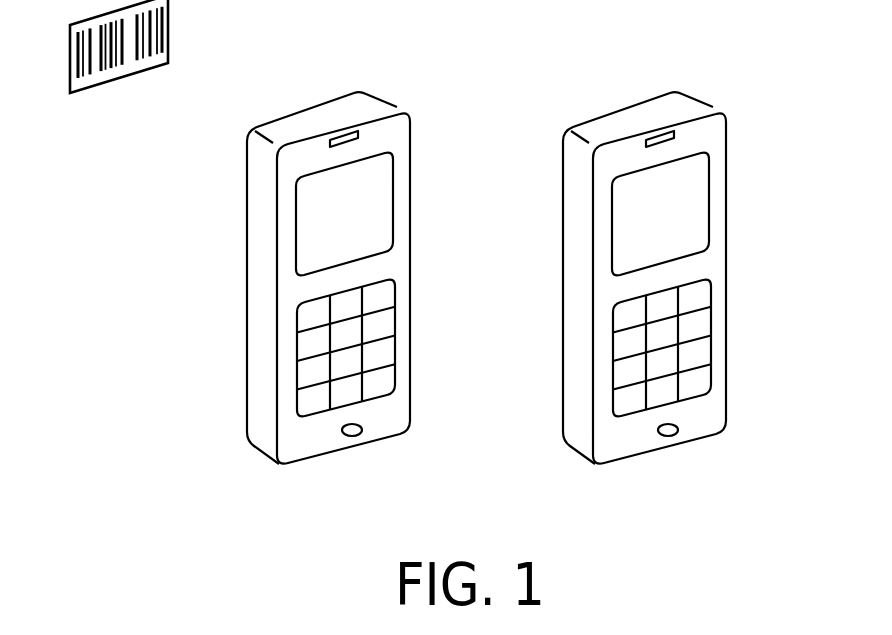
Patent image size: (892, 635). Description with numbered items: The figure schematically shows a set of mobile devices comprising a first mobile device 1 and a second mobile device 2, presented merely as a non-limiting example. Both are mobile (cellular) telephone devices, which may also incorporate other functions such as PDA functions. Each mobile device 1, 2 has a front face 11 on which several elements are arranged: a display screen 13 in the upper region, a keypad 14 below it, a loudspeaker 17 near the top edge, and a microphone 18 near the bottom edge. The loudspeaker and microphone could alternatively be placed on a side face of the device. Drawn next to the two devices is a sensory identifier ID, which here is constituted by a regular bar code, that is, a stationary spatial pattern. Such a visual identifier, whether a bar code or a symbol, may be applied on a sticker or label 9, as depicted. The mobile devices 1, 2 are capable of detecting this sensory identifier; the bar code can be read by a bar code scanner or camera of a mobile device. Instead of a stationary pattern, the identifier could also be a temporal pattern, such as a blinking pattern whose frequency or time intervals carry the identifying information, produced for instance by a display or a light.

The first mobile device 1 is at (357, 287).
The second mobile device 2 is at (579, 452).
The sticker or label 9 is at (156, 74).
The sensory identifier ID is at (133, 63).
The front face 11 is at (400, 420).
The display screen 13 is at (373, 238).
The keypad 14 is at (373, 355).
The loudspeaker 17 is at (360, 132).
The microphone 18 is at (355, 437).